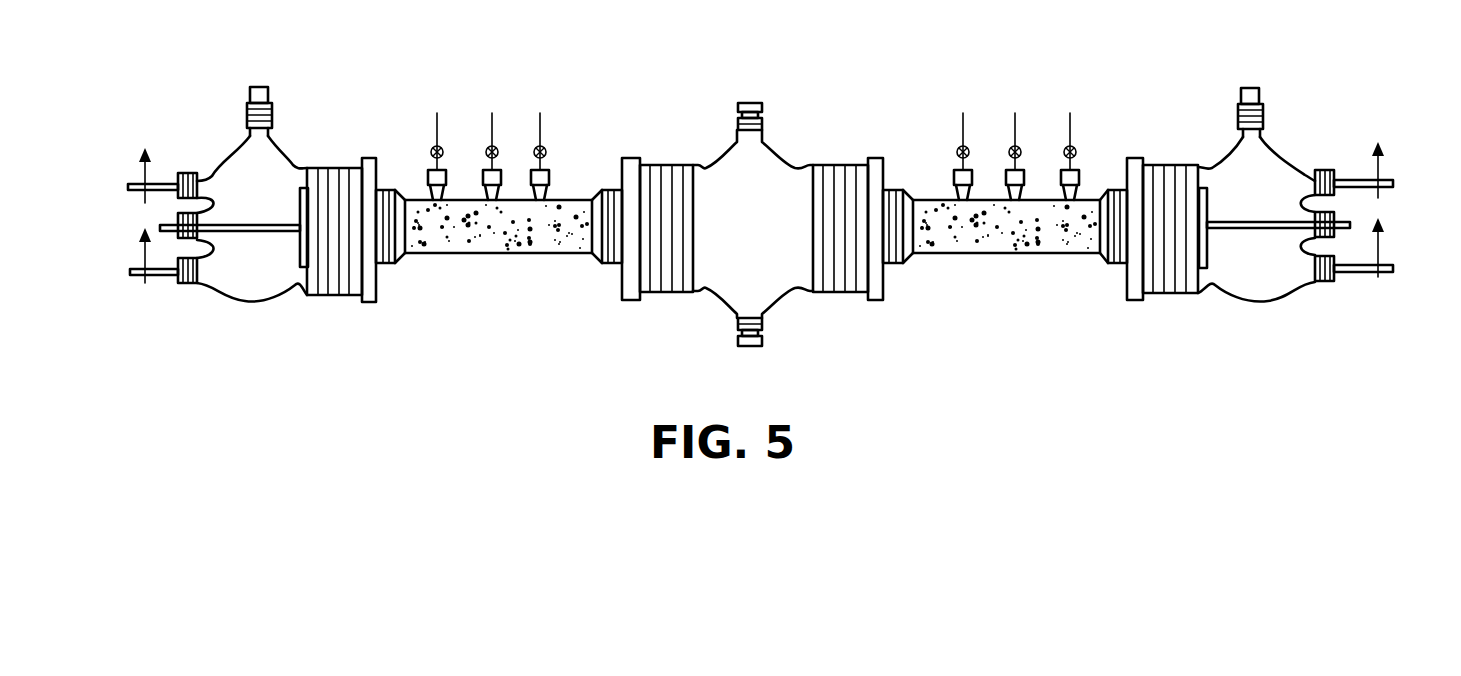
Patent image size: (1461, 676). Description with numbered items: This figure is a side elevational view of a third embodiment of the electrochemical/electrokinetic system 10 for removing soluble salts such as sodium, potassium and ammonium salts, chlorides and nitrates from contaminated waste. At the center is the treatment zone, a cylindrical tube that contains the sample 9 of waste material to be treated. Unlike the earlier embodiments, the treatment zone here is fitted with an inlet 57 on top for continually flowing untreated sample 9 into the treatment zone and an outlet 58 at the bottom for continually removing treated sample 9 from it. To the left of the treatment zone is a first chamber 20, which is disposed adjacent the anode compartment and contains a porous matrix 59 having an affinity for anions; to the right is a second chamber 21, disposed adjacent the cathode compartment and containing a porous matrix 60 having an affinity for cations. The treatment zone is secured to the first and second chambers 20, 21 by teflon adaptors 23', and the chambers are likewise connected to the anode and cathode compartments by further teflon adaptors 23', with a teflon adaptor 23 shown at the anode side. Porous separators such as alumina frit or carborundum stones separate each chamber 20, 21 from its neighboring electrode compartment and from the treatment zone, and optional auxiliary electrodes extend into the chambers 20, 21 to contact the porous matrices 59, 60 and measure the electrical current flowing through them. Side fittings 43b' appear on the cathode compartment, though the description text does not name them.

The sample 9 is at (778, 272).
The system 10 is at (690, 311).
The first chamber 20 is at (489, 262).
The second chamber 21 is at (991, 262).
The teflon adaptor 23 is at (365, 212).
The teflon adaptor 23' is at (897, 196).
The right side ports 43b' is at (1381, 230).
The inlet 57 is at (745, 103).
The outlet 58 is at (750, 347).
The porous matrix 59 is at (521, 233).
The porous matrix 60 is at (1010, 233).